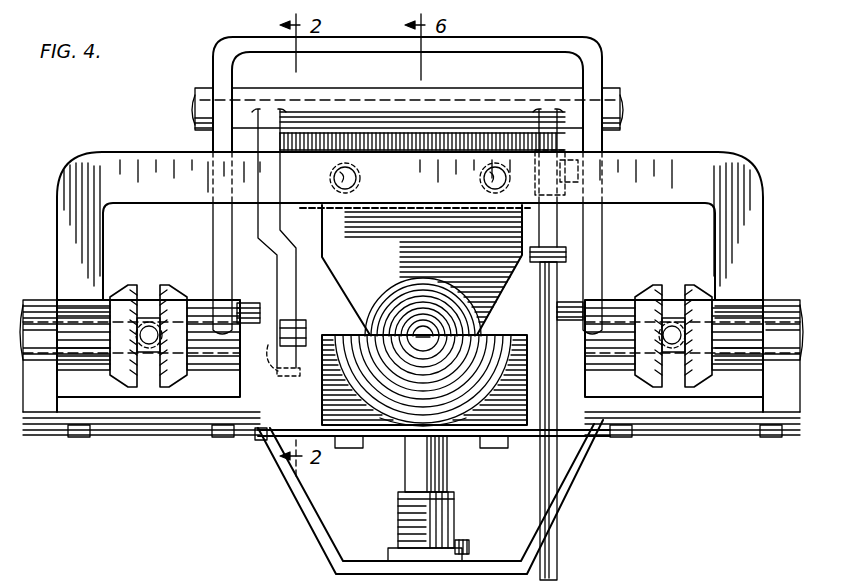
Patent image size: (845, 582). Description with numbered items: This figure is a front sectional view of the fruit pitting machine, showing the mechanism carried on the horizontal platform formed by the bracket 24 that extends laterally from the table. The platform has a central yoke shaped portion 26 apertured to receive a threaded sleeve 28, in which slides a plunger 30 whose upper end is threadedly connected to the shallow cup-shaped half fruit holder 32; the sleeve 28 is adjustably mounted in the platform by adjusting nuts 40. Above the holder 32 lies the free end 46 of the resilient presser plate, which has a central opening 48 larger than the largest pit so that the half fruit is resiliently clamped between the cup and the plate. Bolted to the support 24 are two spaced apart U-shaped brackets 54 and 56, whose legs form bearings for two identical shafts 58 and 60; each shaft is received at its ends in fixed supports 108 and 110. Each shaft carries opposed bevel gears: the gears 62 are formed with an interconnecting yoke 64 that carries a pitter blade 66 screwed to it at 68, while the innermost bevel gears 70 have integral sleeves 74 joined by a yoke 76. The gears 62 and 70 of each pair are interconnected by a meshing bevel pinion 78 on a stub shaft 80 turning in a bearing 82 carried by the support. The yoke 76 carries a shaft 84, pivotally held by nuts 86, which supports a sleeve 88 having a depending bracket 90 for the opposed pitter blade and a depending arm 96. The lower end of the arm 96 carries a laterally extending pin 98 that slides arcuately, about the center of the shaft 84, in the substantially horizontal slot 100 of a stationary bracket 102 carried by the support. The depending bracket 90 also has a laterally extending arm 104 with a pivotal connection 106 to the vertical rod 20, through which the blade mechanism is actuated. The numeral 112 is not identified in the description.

The vertical rod 20 is at (558, 537).
The bracket 24 is at (697, 426).
The yoke shaped portion 26 is at (573, 465).
The threaded sleeve 28 is at (398, 518).
The plunger 30 is at (432, 472).
The half fruit holder 32 is at (406, 424).
The adjusting nuts 40 is at (470, 562).
The free end of presser plate 46 is at (509, 336).
The central opening 48 is at (385, 306).
The bracket 54 is at (182, 405).
The bracket 56 is at (736, 396).
The shaft 58 is at (82, 350).
The shaft 60 is at (778, 345).
The bevel gear 62 is at (122, 290).
The interconnecting yoke 64 is at (135, 162).
The pitter blade 66 is at (422, 270).
The screw 68 is at (480, 178).
The innermost bevel gear 70 is at (173, 290).
The sleeve 74 is at (205, 362).
The yoke 76 is at (600, 63).
The meshing bevel pinion 78 is at (149, 322).
The stub shaft 80 is at (172, 320).
The bearing 82 is at (142, 392).
The shaft 84 is at (333, 108).
The nuts 86 is at (203, 110).
The sleeve 88 is at (494, 90).
The depending bracket 90 is at (395, 125).
The depending arm 96 is at (258, 217).
The pin 98 is at (284, 369).
The slot 100 is at (290, 303).
The stationary bracket 102 is at (260, 440).
The laterally extending arm 104 is at (560, 211).
The pivotal connection 106 is at (585, 173).
The fixed support 108 is at (247, 302).
The fixed support 110 is at (38, 300).
The contact point 112 is at (423, 340).